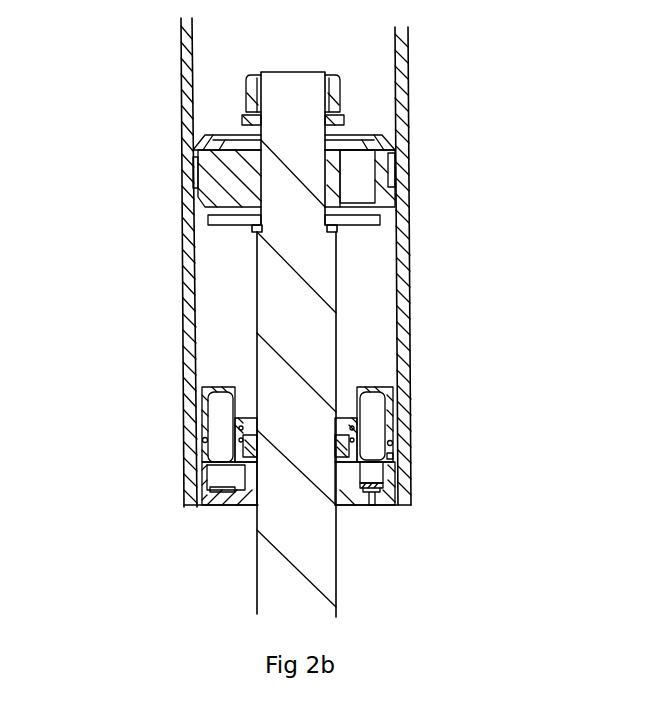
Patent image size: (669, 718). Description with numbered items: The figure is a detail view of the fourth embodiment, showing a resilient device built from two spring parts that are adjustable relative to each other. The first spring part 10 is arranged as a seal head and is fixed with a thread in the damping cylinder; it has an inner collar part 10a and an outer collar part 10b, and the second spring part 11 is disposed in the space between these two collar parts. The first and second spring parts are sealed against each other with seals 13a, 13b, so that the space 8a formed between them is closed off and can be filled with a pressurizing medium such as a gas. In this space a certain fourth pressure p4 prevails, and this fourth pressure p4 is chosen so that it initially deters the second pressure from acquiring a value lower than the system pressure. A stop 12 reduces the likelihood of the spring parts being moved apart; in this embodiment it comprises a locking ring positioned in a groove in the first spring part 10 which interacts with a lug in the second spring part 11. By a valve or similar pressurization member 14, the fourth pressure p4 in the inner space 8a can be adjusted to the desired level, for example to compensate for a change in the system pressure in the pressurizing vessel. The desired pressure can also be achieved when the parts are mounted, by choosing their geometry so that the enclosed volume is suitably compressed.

The first spring part 10 is at (197, 507).
The inner collar part 10a is at (213, 470).
The outer collar part 10b is at (203, 437).
The second spring part 11 is at (198, 390).
The stop 12 is at (358, 425).
The fourth pressure p4 is at (370, 438).
The seal 13a is at (392, 444).
The seal 13b is at (394, 456).
The pressurization member 14 is at (393, 503).
The space 8a is at (368, 473).